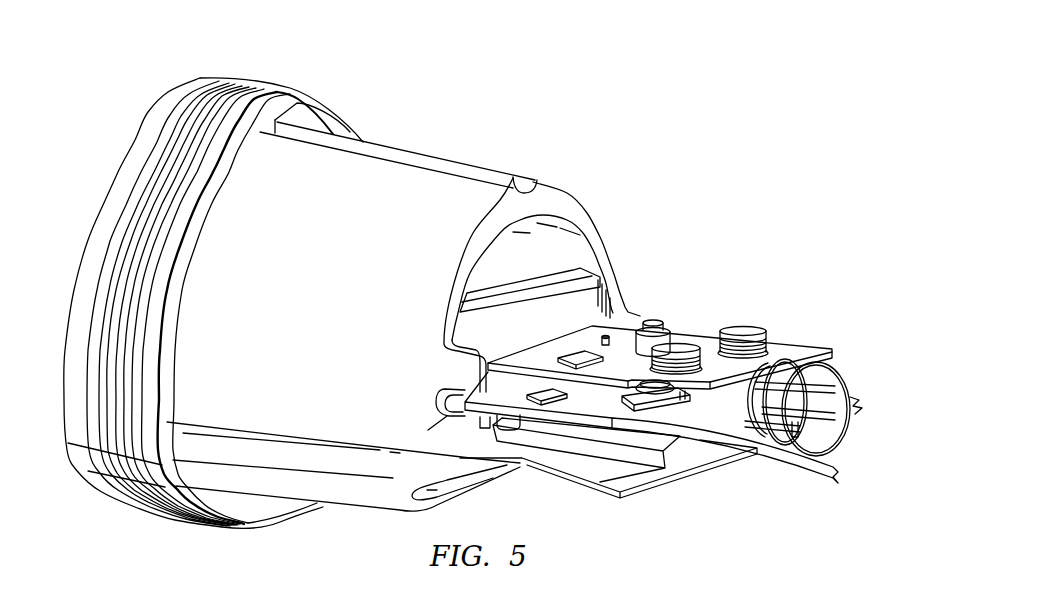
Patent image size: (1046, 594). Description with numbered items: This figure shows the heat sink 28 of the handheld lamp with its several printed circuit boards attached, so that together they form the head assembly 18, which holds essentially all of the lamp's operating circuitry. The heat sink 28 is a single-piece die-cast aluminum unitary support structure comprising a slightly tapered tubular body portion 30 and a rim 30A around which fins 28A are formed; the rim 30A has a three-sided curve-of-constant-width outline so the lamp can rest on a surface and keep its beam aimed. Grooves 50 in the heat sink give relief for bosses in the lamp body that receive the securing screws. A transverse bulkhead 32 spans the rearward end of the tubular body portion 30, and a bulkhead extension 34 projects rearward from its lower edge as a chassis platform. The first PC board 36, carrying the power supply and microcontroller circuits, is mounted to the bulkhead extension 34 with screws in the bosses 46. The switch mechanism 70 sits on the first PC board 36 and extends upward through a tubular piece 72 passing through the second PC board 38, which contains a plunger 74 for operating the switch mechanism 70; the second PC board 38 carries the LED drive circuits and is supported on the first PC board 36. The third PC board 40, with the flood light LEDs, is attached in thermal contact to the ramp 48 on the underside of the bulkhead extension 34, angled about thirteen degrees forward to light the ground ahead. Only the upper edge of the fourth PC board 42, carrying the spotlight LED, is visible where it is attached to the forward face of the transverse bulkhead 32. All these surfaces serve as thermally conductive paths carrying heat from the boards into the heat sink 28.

The head assembly 18 is at (498, 103).
The heat sink 28 is at (408, 188).
The fins 28A is at (175, 157).
The tubular body portion 30 is at (283, 301).
The rim 30A is at (190, 98).
The transverse bulkhead 32 is at (553, 300).
The bulkhead extension 34 is at (673, 458).
The first PC board 36 is at (520, 393).
The second PC board 38 is at (780, 346).
The third PC board 40 is at (627, 490).
The fourth PC board 42 is at (500, 287).
The bosses 46 is at (508, 428).
The ramp 48 is at (552, 474).
The grooves 50 is at (520, 183).
The switch mechanism 70 is at (640, 404).
The tubular piece 72 is at (630, 337).
The plunger 74 is at (653, 321).